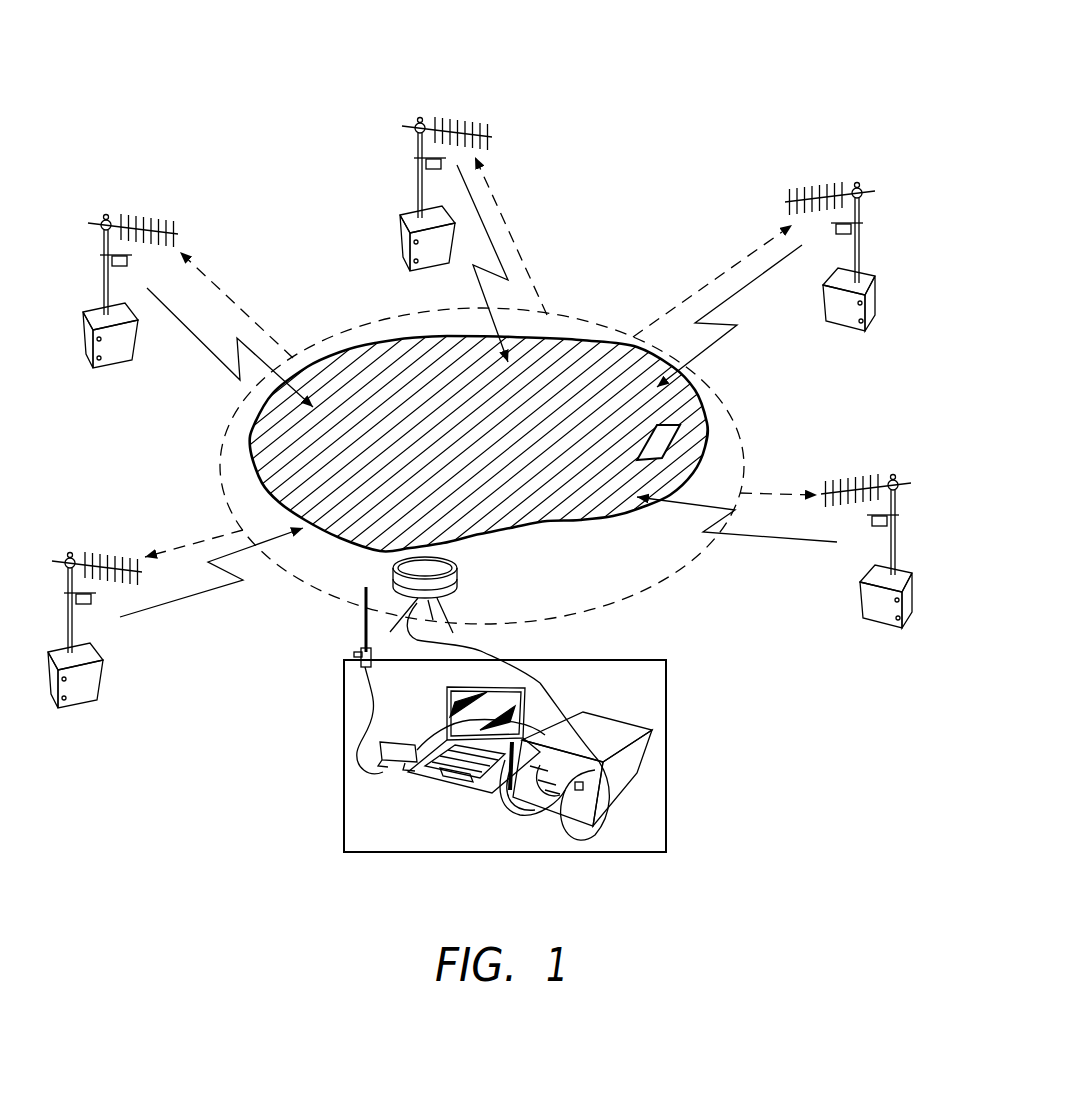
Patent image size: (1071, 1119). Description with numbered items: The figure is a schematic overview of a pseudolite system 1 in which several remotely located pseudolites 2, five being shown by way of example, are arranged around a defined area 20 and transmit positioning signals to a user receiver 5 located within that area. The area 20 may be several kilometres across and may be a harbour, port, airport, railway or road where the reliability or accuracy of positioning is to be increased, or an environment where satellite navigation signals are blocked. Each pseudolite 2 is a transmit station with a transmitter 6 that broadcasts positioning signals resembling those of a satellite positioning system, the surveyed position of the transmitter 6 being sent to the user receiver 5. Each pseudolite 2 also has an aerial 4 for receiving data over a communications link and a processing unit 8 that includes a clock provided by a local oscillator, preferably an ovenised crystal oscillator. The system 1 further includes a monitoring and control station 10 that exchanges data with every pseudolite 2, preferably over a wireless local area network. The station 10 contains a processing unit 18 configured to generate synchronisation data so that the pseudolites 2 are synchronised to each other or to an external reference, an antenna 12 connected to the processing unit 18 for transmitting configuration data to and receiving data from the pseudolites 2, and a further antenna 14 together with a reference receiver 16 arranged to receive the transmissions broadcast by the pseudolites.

The pseudolite system 1 is at (200, 66).
The pseudolite 2 is at (90, 200).
The aerial 4 is at (787, 198).
The user receiver 5 is at (667, 442).
The transmitter 6 is at (838, 236).
The processing unit 8 is at (848, 323).
The monitoring and control station 10 is at (660, 660).
The antenna 12 is at (365, 618).
The antenna 14 is at (462, 573).
The reference receiver 16 is at (598, 713).
The processing unit 18 is at (442, 778).
The defined area 20 is at (382, 358).